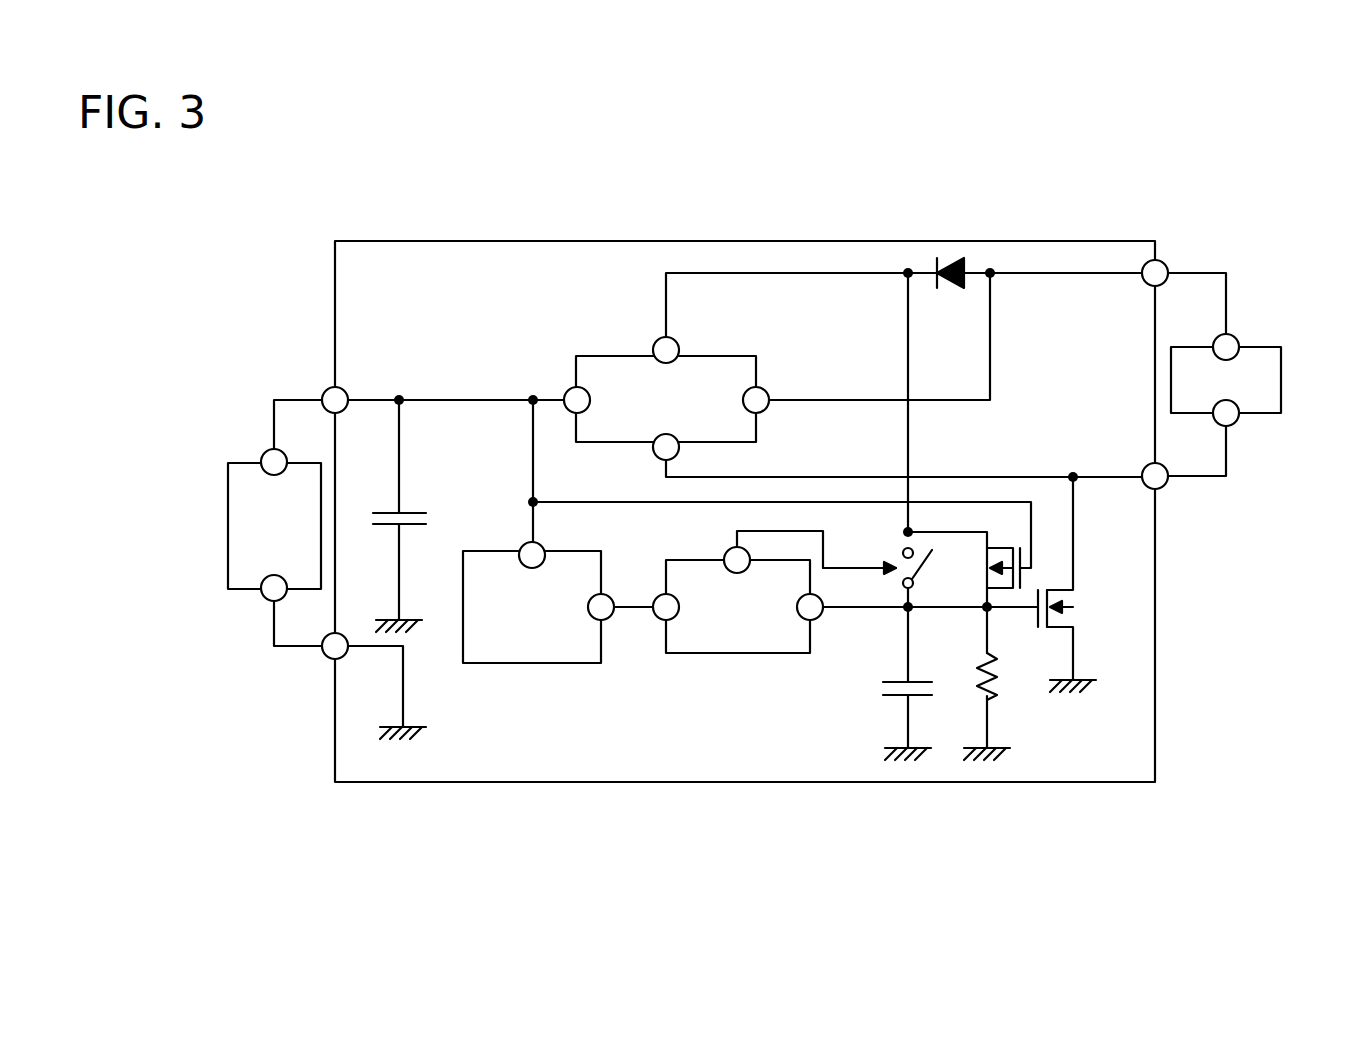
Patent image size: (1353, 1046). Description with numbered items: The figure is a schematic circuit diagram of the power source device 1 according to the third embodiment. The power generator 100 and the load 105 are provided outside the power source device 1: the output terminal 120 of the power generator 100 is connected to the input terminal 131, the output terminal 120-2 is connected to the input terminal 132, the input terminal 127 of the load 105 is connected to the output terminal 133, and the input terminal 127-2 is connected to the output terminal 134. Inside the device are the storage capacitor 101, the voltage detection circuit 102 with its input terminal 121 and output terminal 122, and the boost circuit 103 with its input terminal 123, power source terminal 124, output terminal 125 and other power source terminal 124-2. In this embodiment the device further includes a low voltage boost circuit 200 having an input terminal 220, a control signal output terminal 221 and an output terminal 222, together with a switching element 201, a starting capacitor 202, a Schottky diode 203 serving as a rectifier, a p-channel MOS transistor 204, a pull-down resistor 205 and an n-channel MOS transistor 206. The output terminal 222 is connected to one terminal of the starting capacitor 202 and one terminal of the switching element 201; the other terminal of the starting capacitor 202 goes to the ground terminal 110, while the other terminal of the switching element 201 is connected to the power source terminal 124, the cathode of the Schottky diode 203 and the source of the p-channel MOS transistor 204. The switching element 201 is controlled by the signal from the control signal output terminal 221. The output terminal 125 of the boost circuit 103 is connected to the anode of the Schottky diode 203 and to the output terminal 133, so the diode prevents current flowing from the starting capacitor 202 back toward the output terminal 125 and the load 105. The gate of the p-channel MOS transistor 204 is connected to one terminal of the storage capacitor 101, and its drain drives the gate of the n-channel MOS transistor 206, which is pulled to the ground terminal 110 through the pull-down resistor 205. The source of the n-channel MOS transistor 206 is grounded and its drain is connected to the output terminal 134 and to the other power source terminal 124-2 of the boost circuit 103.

The power source device 1 is at (496, 240).
The power generator 100 is at (228, 523).
The storage capacitor 101 is at (410, 511).
The voltage detection circuit 102 is at (495, 665).
The boost circuit 103 is at (620, 354).
The load 105 is at (1283, 380).
The ground terminal 110 is at (418, 618).
The output terminal of the power generator 120 is at (266, 450).
The output terminal of the power generator 120-2 is at (272, 601).
The input terminal of the voltage detection circuit 121 is at (520, 550).
The output terminal of the voltage detection circuit 122 is at (611, 596).
The input terminal of the boost circuit 123 is at (565, 392).
The power source terminal of the boost circuit 124 is at (678, 344).
The other power source terminal of the boost circuit 124-2 is at (656, 454).
The output terminal of the boost circuit 125 is at (768, 392).
The input terminal of the load 127 is at (1239, 340).
The input terminal of the load 127-2 is at (1238, 420).
The input terminal 131 is at (328, 388).
The input terminal 132 is at (332, 660).
The output terminal 133 is at (1165, 262).
The output terminal 134 is at (1165, 488).
The low voltage boost circuit 200 is at (740, 656).
The switching element 201 is at (922, 571).
The starting capacitor 202 is at (890, 680).
The Schottky diode 203 is at (950, 290).
The p-channel MOS transistor 204 is at (1032, 540).
The pull-down resistor 205 is at (1000, 688).
The n-channel MOS transistor 206 is at (1050, 602).
The input terminal of the low voltage boost circuit 220 is at (656, 620).
The control signal output terminal 221 is at (726, 552).
The output terminal of the low voltage boost circuit 222 is at (820, 620).